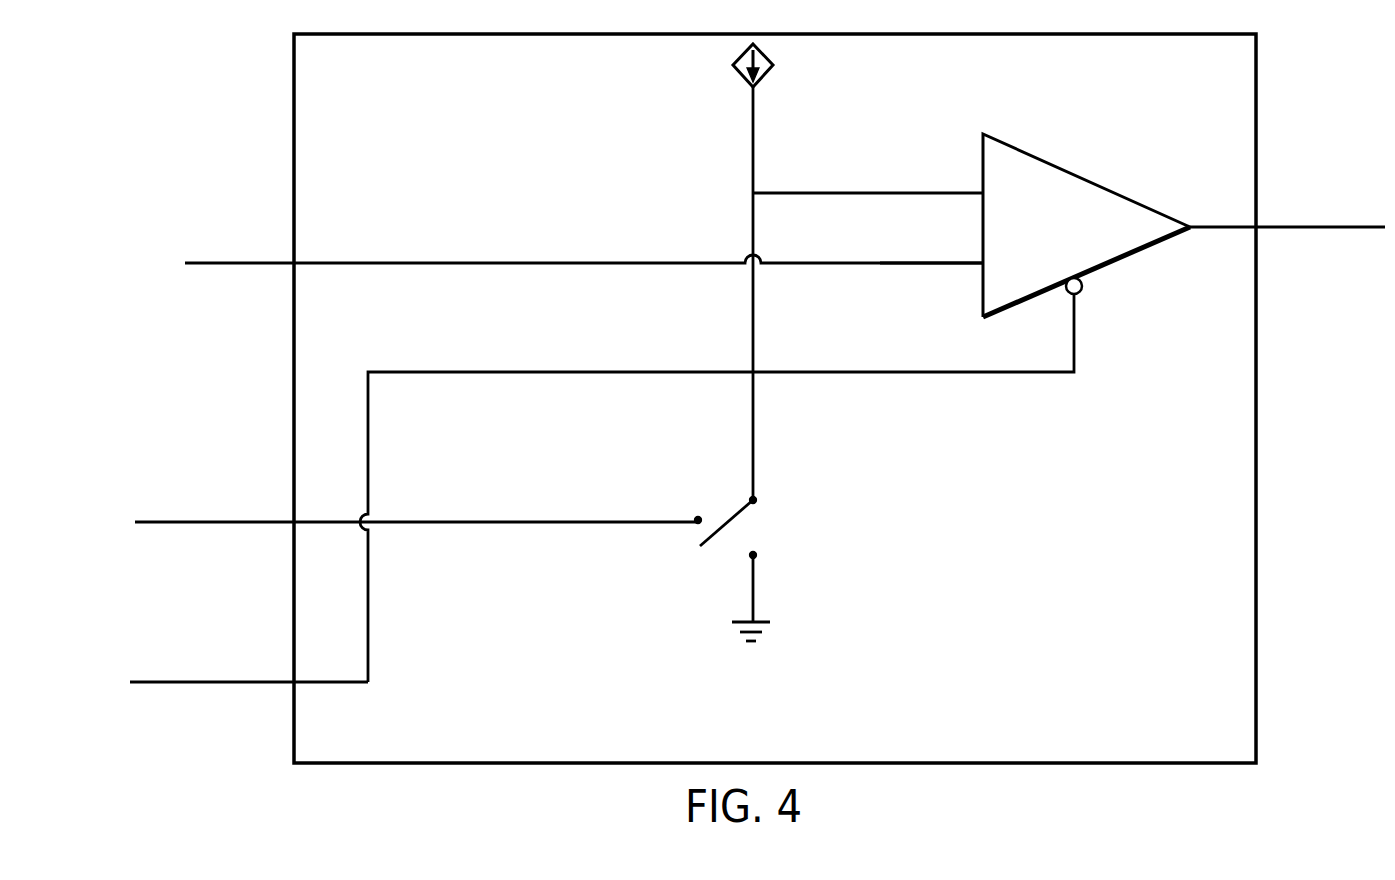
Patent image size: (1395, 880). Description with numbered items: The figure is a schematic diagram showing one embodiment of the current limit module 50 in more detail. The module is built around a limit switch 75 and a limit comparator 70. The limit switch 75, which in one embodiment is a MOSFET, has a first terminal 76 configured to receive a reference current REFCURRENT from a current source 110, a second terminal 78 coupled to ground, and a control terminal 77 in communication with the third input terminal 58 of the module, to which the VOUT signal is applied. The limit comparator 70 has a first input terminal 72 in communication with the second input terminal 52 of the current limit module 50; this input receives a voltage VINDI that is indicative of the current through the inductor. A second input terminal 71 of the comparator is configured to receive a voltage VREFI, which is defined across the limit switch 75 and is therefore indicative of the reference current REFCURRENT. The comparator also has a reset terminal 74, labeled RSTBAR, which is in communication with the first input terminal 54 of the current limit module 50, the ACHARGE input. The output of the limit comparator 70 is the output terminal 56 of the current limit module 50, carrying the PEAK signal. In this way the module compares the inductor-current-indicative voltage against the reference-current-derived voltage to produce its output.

The current limit module 50 is at (668, 81).
The second input terminal 52 is at (292, 261).
The first input terminal 54 is at (292, 680).
The output terminal 56 is at (1258, 224).
The third input terminal 58 is at (292, 520).
The limit comparator 70 is at (1092, 194).
The second input terminal 71 is at (981, 192).
The first input terminal 72 is at (981, 262).
The reset terminal 74 is at (1082, 292).
The limit switch 75 is at (1191, 224).
The first terminal 76 is at (750, 497).
The control terminal 77 is at (695, 518).
The second terminal 78 is at (757, 557).
The current source 110 is at (768, 62).